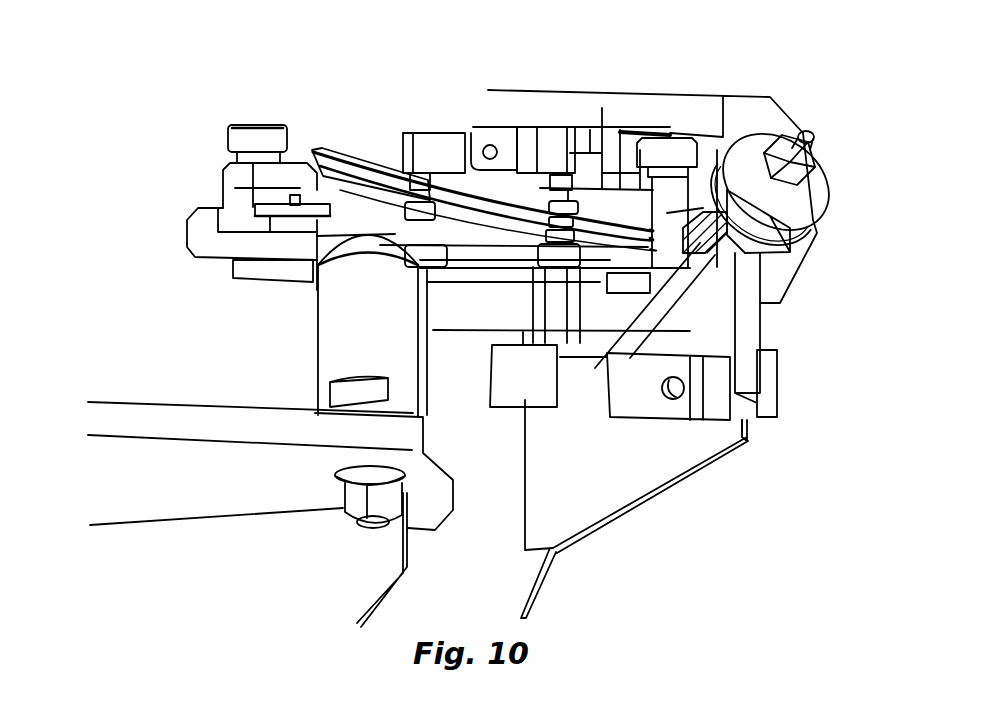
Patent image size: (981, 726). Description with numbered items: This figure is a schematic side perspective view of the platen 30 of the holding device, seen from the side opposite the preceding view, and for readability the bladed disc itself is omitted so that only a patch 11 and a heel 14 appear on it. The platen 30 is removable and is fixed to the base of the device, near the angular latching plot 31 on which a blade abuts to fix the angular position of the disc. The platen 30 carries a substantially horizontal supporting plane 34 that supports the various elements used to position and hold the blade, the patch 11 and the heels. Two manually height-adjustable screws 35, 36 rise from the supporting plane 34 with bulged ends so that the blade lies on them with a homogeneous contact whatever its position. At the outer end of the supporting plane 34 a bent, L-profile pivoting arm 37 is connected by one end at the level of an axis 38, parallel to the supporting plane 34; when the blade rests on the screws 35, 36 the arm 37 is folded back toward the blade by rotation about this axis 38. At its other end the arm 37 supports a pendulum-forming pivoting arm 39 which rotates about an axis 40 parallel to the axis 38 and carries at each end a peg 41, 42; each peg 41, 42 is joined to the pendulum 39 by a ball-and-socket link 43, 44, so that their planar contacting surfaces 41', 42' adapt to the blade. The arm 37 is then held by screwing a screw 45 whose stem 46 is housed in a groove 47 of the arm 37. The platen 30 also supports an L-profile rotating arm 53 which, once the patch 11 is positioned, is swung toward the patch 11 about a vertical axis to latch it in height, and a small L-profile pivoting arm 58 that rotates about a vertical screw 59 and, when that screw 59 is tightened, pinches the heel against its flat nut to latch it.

The patch 11 is at (442, 195).
The heel 14 is at (337, 165).
The platen 30 is at (652, 525).
The angular latching plot 31 is at (343, 364).
The supporting plane 34 is at (313, 270).
The screw 35 is at (420, 268).
The screw 36 is at (555, 268).
The pivoting arm 37 is at (710, 110).
The axis 38 is at (673, 399).
The pendulum-forming pivoting arm 39 is at (457, 150).
The axis 40 is at (490, 145).
The peg 41 is at (483, 138).
The planar surface 41' is at (487, 164).
The peg 42 is at (510, 280).
The planar surface 42' is at (604, 123).
The ball-and-socket link 43 is at (372, 165).
The ball-and-socket link 44 is at (546, 128).
The screw 45 is at (760, 140).
The stem 46 is at (688, 255).
The groove 47 is at (653, 322).
The rotating arm 53 is at (621, 170).
The small pivoting arm 58 is at (705, 232).
The vertical screw 59 is at (680, 157).